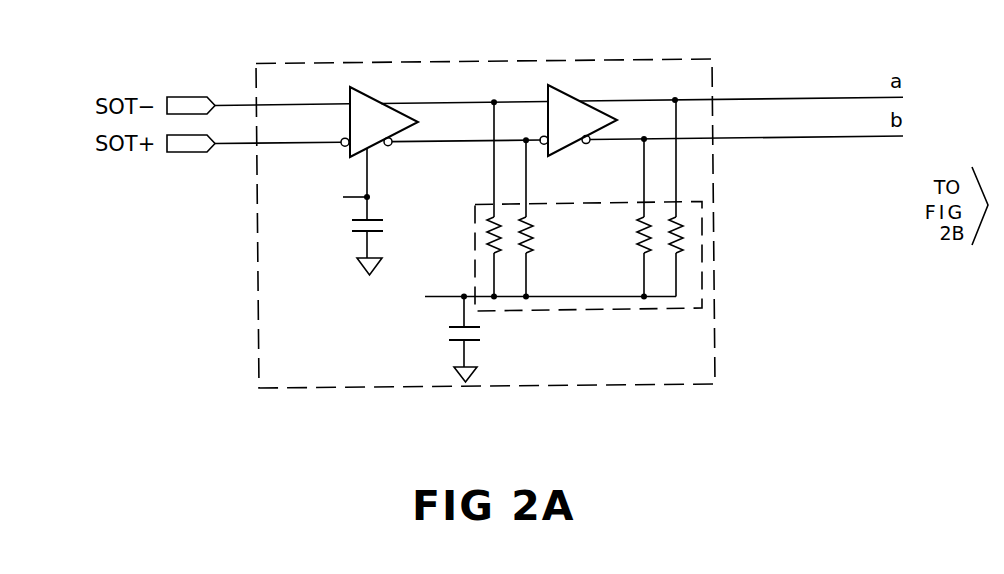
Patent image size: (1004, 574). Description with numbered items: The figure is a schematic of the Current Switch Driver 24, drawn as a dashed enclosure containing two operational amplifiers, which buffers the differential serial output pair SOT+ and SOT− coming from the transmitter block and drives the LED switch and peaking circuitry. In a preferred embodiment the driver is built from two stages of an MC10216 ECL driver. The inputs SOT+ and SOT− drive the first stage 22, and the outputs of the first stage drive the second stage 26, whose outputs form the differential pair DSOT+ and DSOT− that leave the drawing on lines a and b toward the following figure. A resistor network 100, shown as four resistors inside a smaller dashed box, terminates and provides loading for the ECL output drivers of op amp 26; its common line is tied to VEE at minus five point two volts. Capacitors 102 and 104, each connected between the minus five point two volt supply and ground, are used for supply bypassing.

The first stage 22 is at (373, 98).
The Current Switch Driver 24 is at (590, 60).
The second stage 26 is at (570, 93).
The resistor network 100 is at (652, 309).
The capacitor 102 is at (412, 202).
The capacitor 104 is at (493, 330).